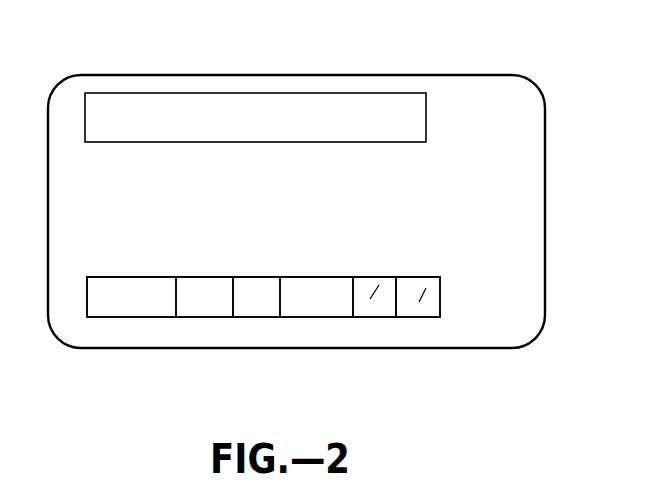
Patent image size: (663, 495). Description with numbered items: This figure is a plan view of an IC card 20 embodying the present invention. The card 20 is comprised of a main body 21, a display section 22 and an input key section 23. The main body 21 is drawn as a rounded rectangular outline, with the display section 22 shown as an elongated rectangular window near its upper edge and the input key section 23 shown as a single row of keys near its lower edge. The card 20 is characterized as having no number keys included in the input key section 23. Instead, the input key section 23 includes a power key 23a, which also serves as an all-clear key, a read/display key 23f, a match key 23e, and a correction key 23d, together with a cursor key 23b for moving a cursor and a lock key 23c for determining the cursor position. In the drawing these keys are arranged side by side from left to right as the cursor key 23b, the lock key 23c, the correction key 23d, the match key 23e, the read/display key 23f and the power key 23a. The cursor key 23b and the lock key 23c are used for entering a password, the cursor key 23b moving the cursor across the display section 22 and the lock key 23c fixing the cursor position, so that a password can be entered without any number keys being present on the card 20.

The IC card 20 is at (314, 186).
The main body 21 is at (546, 138).
The display section 22 is at (375, 102).
The input key section 23 is at (281, 255).
The power key 23a is at (412, 277).
The cursor key 23b is at (116, 277).
The lock key 23c is at (198, 277).
The correction key 23d is at (250, 277).
The match key 23e is at (308, 277).
The read/display key 23f is at (368, 277).